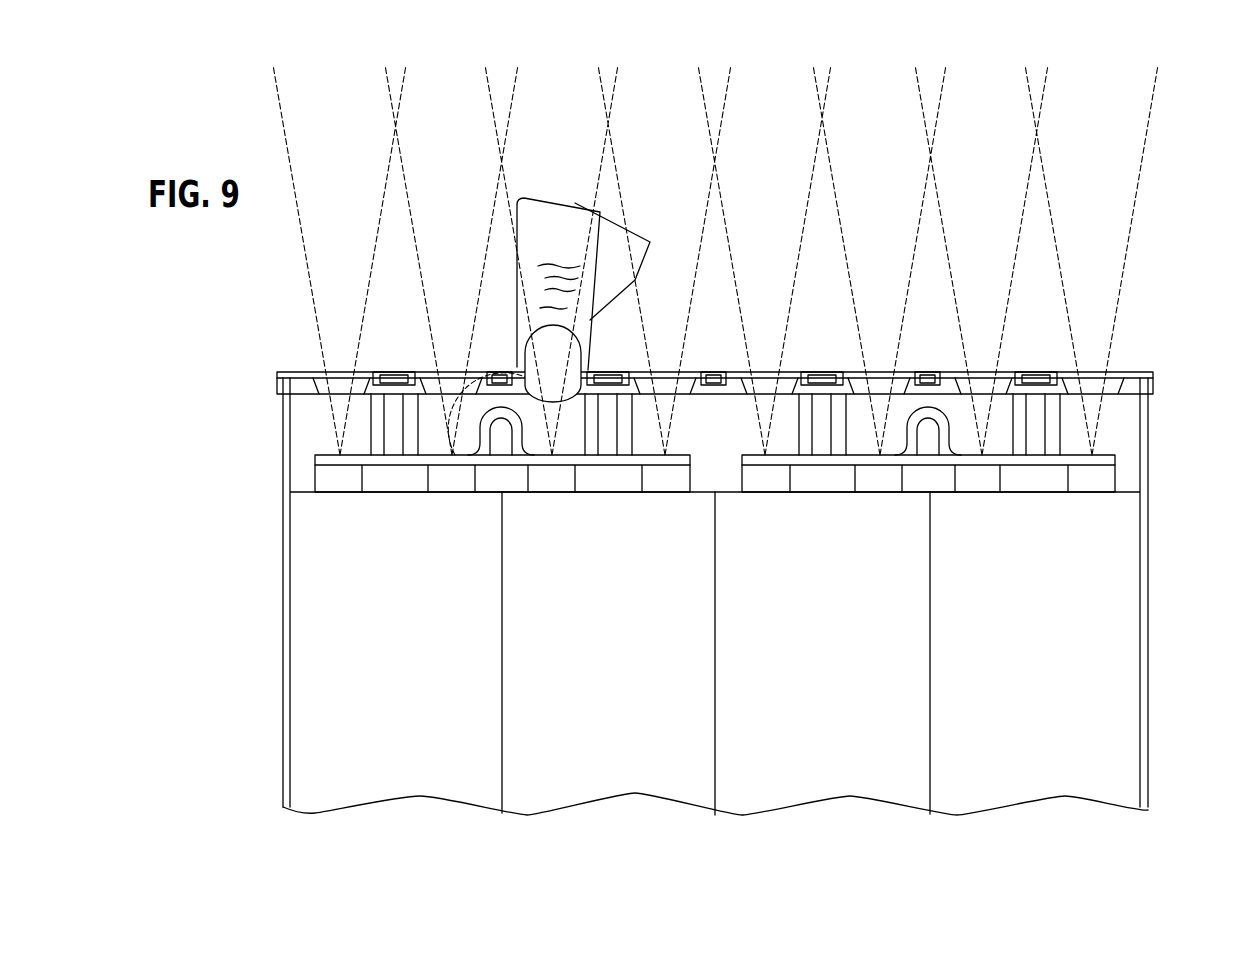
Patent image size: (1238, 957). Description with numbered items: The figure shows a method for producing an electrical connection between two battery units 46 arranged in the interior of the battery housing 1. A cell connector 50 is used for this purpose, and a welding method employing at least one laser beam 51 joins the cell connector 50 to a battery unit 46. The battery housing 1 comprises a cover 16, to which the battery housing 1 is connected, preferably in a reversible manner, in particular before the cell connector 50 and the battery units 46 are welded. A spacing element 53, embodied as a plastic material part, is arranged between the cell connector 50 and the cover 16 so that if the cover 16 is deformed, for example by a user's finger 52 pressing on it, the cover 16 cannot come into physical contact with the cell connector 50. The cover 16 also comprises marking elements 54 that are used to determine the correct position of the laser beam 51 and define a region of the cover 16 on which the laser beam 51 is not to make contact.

The battery housing 1 is at (1147, 450).
The cover 16 is at (1127, 387).
The battery unit 46 is at (390, 718).
The cell connector 50 is at (397, 462).
The laser beam 51 is at (1095, 147).
The finger 52 is at (563, 308).
The spacing element 53 is at (1050, 420).
The marking element 54 is at (932, 378).